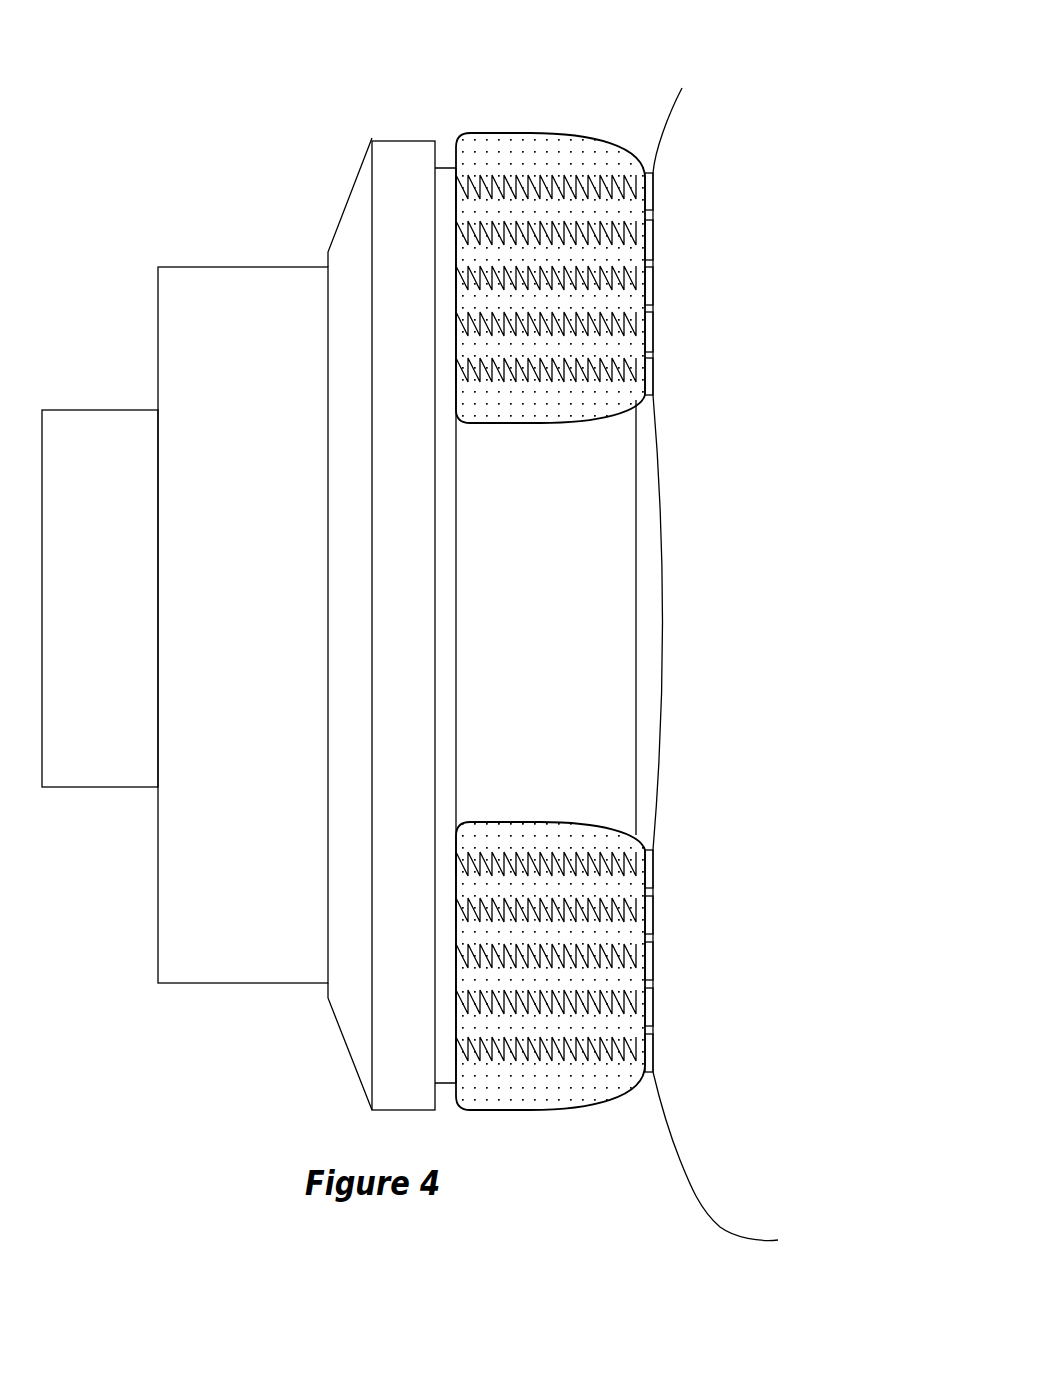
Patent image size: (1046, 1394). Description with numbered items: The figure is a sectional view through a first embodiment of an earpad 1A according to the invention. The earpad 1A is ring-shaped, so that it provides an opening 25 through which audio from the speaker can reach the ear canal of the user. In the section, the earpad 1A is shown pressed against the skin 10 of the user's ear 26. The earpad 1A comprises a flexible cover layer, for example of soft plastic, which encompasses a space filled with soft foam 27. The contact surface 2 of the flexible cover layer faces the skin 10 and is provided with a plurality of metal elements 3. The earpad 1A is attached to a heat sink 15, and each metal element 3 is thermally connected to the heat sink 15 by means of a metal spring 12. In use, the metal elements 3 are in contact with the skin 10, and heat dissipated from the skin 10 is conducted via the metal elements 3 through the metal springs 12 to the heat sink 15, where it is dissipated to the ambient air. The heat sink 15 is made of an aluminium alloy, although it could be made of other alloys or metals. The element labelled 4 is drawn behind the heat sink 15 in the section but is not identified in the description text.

The earpad 1A is at (630, 82).
The contact surface 2 is at (653, 353).
The metal elements 3 is at (653, 193).
The housing 4 is at (226, 598).
The skin 10 is at (678, 1152).
The metal spring 12 is at (555, 178).
The heat sink 15 is at (380, 237).
The opening 25 is at (580, 617).
The ear 26 is at (700, 823).
The soft foam 27 is at (492, 160).